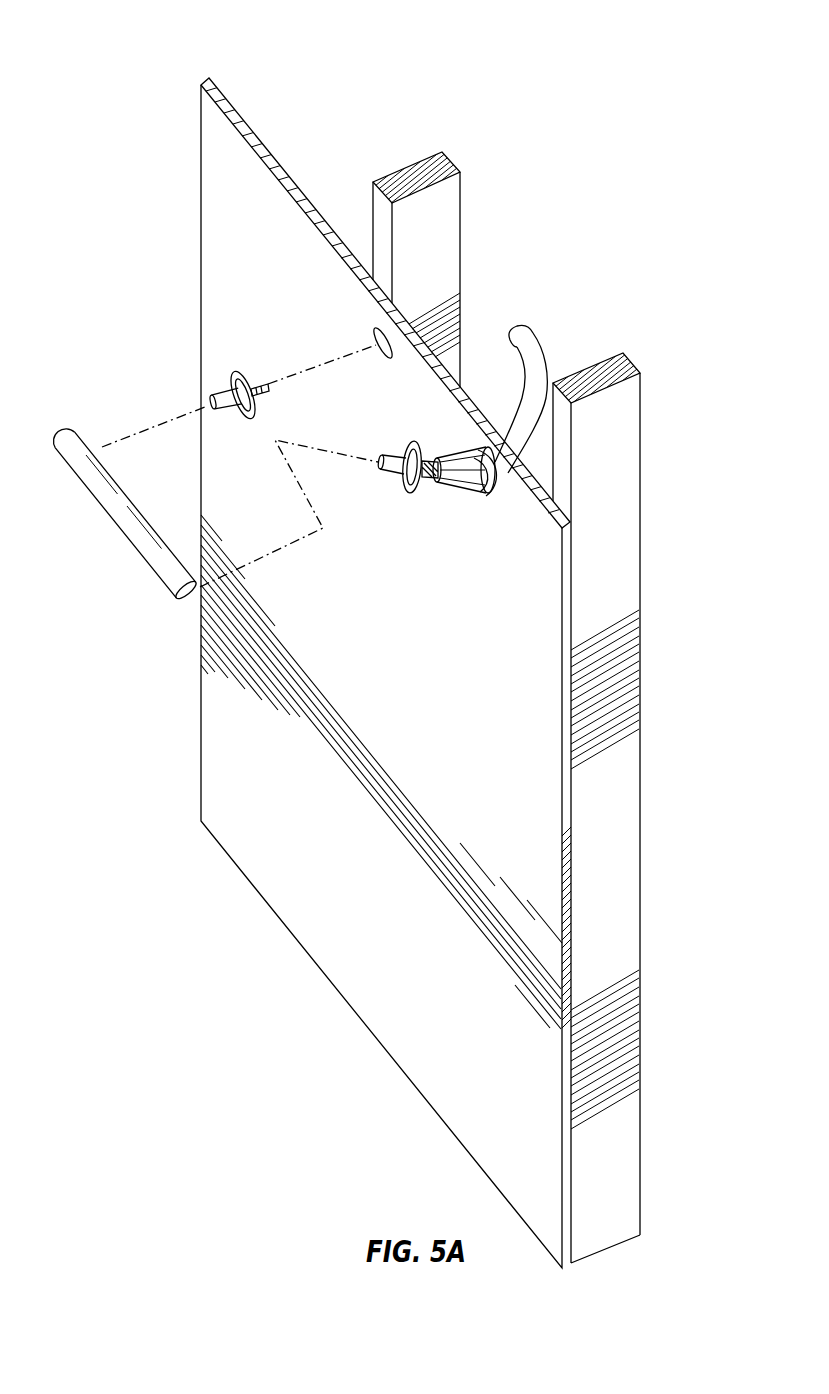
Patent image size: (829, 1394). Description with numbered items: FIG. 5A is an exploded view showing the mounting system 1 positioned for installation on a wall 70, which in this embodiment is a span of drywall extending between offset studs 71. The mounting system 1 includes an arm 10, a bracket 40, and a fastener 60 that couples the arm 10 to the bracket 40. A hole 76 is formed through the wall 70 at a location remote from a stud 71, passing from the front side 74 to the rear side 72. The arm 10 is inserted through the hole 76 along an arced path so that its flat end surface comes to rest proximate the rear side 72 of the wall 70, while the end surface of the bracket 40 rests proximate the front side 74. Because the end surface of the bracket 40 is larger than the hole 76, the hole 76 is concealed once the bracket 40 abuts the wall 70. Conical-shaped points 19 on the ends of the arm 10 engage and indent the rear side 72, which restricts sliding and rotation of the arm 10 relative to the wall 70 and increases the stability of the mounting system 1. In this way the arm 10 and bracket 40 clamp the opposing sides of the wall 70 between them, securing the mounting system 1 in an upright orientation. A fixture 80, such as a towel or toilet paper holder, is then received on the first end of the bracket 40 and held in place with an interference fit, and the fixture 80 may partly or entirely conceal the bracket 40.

The mounting system 1 is at (458, 440).
The arm 10 is at (538, 425).
The conical-shaped points 19 is at (527, 337).
The bracket 40 is at (228, 393).
The fastener 60 is at (377, 465).
The wall 70 is at (515, 996).
The studs 71 is at (440, 222).
The rear side 72 is at (283, 173).
The front side 74 is at (545, 850).
The hole 76 is at (378, 330).
The fixture 80 is at (118, 513).